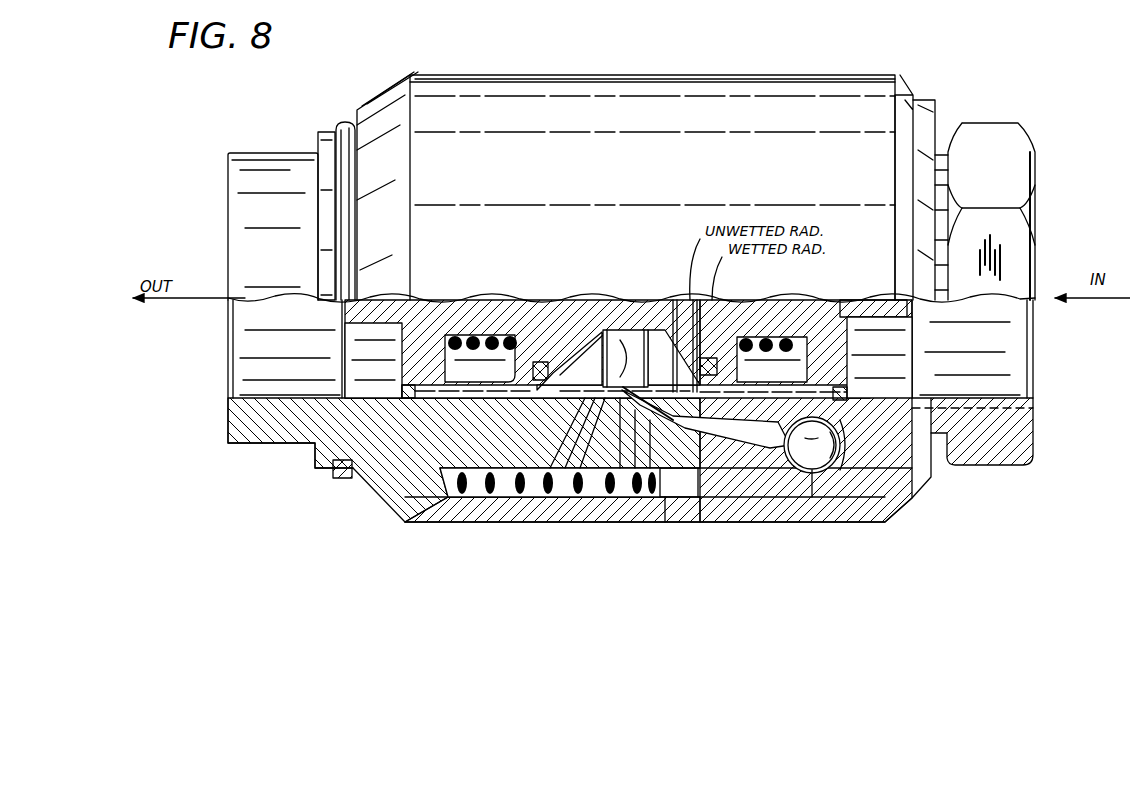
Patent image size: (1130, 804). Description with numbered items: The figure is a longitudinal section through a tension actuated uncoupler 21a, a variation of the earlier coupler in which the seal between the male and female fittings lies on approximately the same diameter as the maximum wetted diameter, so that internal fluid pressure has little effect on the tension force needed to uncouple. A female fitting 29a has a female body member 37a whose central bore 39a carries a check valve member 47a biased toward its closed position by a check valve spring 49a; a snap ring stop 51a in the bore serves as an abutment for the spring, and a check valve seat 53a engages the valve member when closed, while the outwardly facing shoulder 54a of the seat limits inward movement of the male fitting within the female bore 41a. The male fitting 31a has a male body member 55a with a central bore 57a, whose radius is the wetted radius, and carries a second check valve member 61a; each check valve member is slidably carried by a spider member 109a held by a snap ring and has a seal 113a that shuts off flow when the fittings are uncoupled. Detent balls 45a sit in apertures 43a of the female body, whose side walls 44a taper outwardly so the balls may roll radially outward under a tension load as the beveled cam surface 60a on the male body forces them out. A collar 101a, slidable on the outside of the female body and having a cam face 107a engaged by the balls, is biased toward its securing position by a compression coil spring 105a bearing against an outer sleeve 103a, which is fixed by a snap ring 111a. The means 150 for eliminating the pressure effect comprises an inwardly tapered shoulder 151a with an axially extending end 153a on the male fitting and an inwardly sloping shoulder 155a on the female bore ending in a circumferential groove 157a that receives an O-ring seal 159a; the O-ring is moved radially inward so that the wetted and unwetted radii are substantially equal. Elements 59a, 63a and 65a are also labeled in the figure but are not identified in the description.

The tension actuated uncoupler 21a is at (748, 68).
The outer sleeve 103a is at (617, 118).
The female fitting 29a is at (312, 458).
The spider member 109a is at (405, 325).
The snap ring 111a is at (338, 150).
The inlet fitting 59a is at (912, 395).
The male fitting 31a is at (1013, 437).
The central bore 57a is at (997, 398).
The female body member 37a is at (407, 447).
The apertures 43a is at (915, 500).
The cam face 107a is at (885, 522).
The central bore 39a is at (380, 392).
The snap ring stop 51a is at (508, 378).
The check valve spring 49a is at (450, 333).
The check valve member 47a is at (520, 300).
The check valve seat 53a is at (545, 300).
The outwardly facing shoulder 54a is at (595, 300).
The check valve member 61a is at (625, 300).
The seal ring 63a is at (745, 300).
The beveled cam surface 60a is at (850, 370).
The compression coil spring 105a is at (480, 520).
The seal 113a is at (421, 522).
The detent balls 45a is at (832, 522).
The side walls 44a is at (790, 522).
The male body member 55a is at (900, 418).
The female bore 41a is at (712, 522).
The collar 101a is at (668, 522).
The inwardly tapered shoulder 151a is at (652, 522).
The inwardly sloping shoulder 155a is at (648, 522).
The means for eliminating internal pressure effect 150 is at (620, 522).
The circumferential groove 157a is at (580, 522).
The O-ring seal 159a is at (575, 522).
The axially extending end 153a is at (565, 522).
The vent port 65a is at (812, 522).